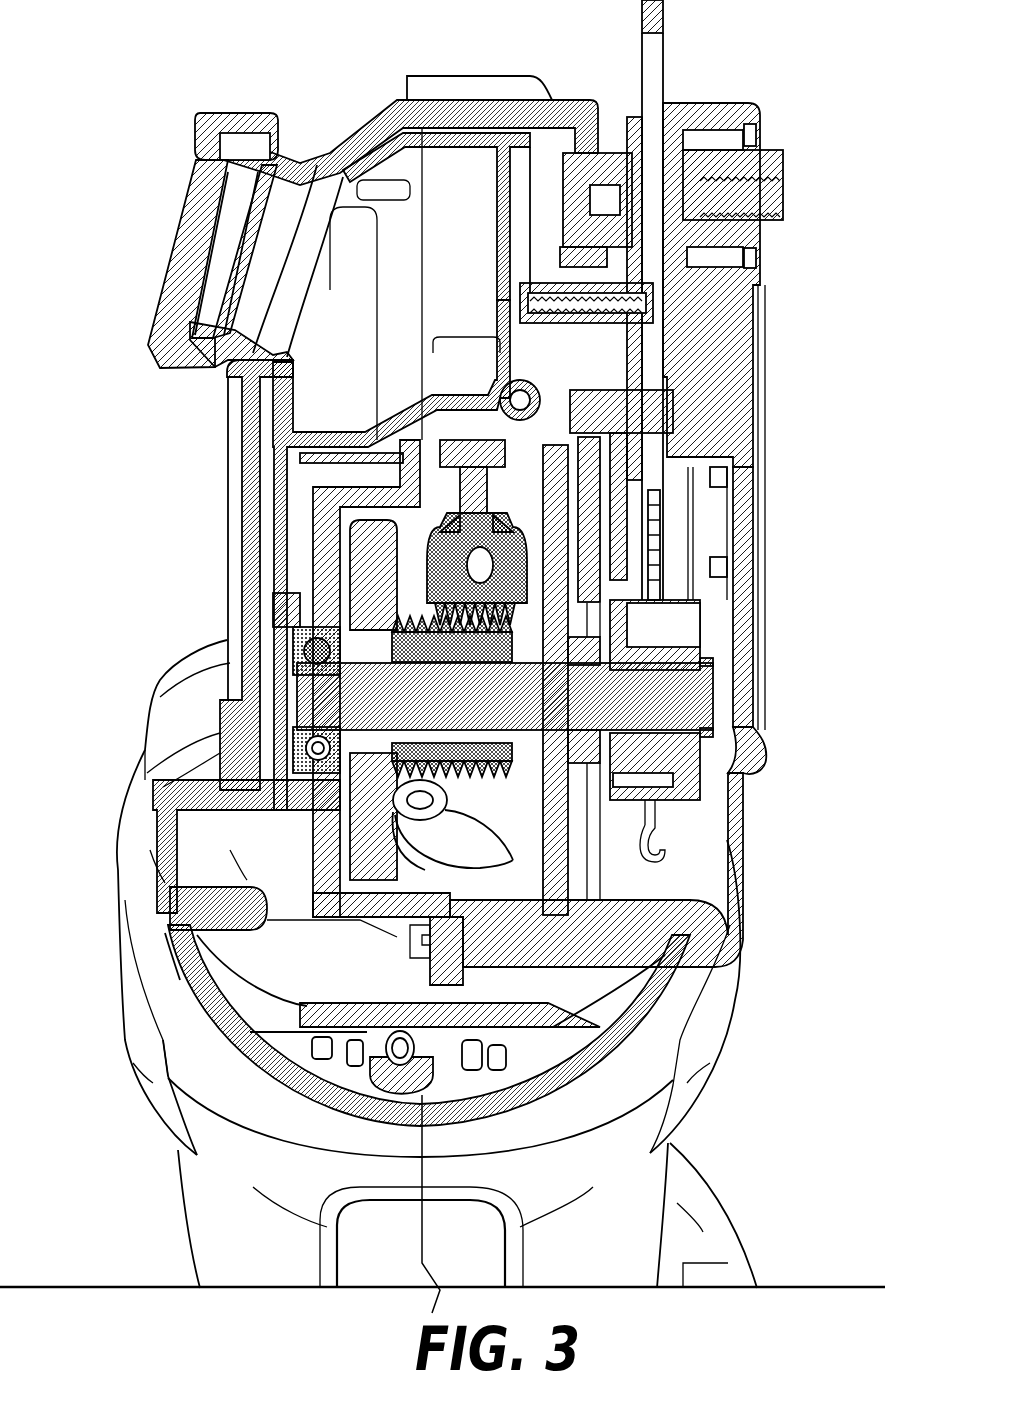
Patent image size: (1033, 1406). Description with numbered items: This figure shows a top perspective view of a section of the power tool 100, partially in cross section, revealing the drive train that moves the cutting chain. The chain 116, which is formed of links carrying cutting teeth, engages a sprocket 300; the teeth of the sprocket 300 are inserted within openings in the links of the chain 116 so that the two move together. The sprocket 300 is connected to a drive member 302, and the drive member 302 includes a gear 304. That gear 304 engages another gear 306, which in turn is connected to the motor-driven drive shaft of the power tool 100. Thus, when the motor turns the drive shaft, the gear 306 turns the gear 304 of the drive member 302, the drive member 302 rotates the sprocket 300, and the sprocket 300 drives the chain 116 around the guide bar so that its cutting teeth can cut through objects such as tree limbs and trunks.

The power tool 100 is at (466, 29).
The chain 116 is at (663, 518).
The sprocket 300 is at (700, 757).
The drive member 302 is at (717, 682).
The gear 304 is at (400, 633).
The gear 306 is at (393, 803).